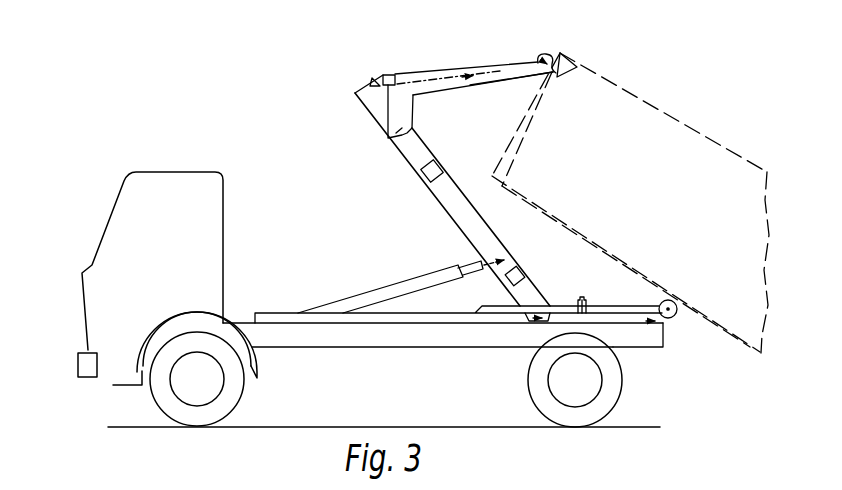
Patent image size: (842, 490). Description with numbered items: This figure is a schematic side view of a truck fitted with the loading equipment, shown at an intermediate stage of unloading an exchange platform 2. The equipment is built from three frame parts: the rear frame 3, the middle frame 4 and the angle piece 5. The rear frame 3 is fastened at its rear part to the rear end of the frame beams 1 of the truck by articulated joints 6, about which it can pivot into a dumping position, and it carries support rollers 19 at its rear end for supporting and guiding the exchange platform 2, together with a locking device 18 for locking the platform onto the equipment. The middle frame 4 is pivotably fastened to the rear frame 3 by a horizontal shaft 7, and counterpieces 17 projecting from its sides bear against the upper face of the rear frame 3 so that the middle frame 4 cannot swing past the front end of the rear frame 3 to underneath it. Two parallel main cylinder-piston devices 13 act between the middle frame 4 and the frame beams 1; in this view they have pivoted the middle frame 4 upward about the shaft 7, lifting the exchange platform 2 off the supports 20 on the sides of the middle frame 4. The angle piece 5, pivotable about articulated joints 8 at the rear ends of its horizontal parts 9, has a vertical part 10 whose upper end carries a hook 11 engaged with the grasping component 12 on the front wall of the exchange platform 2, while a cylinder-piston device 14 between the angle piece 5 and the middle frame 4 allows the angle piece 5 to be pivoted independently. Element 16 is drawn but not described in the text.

The frame beams 1 is at (417, 337).
The exchange platform 2 is at (630, 203).
The rear frame 3 is at (610, 306).
The middle frame 4 is at (440, 200).
The angle piece 5 is at (432, 70).
The articulated joints 6 is at (665, 327).
The horizontal shaft 7 is at (535, 322).
The articulated joints 8 is at (397, 132).
The horizontal parts 9 is at (395, 99).
The vertical part 10 is at (493, 80).
The hook 11 is at (542, 60).
The grasping component 12 is at (577, 66).
The main cylinder-piston devices 13 is at (387, 293).
The cylinder-piston device 14 is at (388, 74).
The latch 16 is at (372, 81).
The counterpieces 17 is at (508, 283).
The locking device 18 is at (578, 297).
The support rollers 19 is at (676, 306).
The supports 20 is at (423, 173).